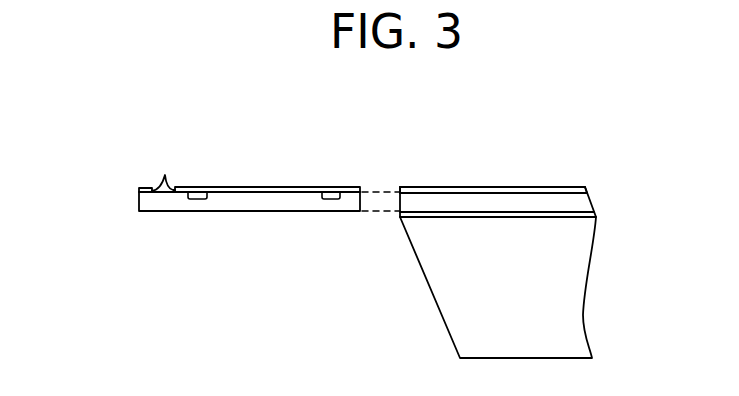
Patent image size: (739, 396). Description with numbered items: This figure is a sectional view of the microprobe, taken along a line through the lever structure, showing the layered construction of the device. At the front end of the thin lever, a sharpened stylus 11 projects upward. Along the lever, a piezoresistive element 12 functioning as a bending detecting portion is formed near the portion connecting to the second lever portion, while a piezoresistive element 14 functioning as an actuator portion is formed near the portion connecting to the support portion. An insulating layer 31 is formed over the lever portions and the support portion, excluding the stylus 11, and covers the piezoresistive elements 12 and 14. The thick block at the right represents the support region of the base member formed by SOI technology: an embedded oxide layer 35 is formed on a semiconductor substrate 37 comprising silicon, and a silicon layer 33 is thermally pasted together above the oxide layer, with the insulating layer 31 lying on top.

The stylus 11 is at (165, 177).
The piezoresistive element 12 is at (195, 200).
The piezoresistive element 14 is at (327, 200).
The insulating layer 31 is at (148, 189).
The silicon layer 33 is at (586, 205).
The embedded oxide layer 35 is at (593, 213).
The semiconductor substrate 37 is at (563, 288).